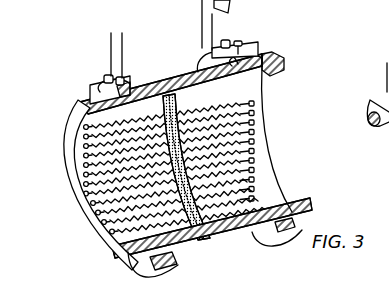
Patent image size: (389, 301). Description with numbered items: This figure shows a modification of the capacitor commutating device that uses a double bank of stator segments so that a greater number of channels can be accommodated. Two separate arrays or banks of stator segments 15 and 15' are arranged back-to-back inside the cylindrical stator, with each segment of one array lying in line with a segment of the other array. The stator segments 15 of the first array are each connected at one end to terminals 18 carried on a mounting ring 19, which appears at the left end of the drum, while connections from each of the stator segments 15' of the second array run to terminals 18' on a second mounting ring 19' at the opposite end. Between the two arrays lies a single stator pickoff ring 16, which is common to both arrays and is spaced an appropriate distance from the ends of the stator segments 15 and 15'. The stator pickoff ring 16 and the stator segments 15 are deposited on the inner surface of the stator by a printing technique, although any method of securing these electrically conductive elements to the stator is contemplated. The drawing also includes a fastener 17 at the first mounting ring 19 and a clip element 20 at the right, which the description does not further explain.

The stator segments 15 is at (153, 169).
The stator segments 15' is at (271, 151).
The stator pickoff ring 16 is at (201, 229).
The bolt 17 is at (121, 44).
The terminals 18 is at (126, 72).
The terminals 18' is at (251, 35).
The mounting ring 19 is at (83, 90).
The mounting ring 19' is at (250, 57).
The hook clip 20 is at (377, 128).